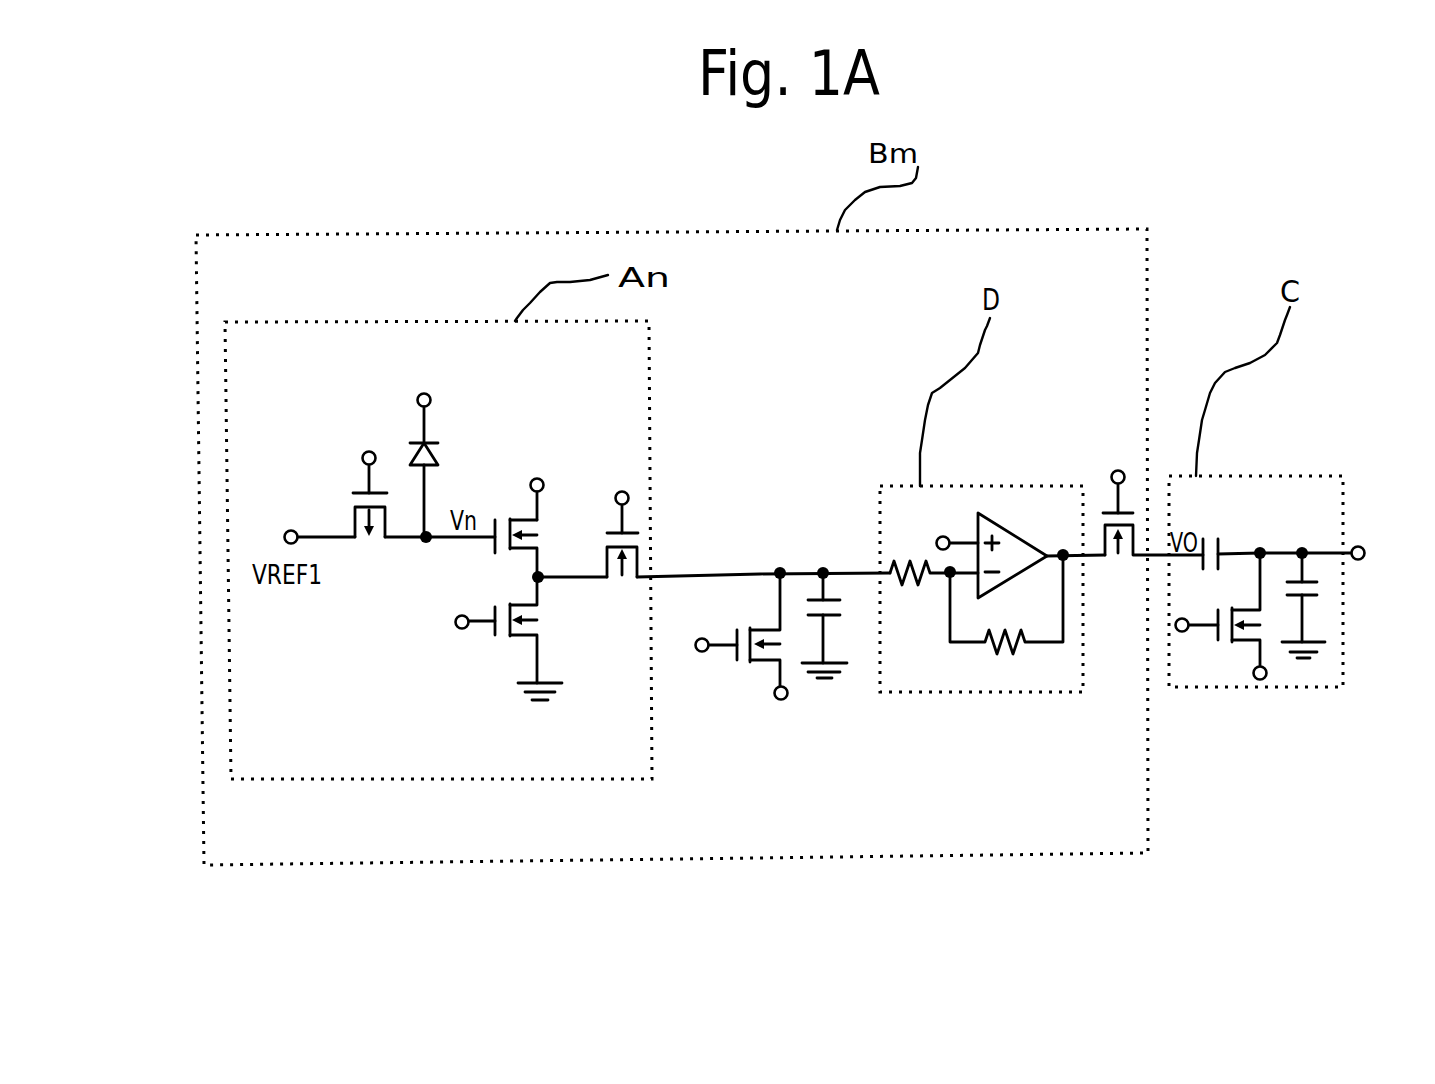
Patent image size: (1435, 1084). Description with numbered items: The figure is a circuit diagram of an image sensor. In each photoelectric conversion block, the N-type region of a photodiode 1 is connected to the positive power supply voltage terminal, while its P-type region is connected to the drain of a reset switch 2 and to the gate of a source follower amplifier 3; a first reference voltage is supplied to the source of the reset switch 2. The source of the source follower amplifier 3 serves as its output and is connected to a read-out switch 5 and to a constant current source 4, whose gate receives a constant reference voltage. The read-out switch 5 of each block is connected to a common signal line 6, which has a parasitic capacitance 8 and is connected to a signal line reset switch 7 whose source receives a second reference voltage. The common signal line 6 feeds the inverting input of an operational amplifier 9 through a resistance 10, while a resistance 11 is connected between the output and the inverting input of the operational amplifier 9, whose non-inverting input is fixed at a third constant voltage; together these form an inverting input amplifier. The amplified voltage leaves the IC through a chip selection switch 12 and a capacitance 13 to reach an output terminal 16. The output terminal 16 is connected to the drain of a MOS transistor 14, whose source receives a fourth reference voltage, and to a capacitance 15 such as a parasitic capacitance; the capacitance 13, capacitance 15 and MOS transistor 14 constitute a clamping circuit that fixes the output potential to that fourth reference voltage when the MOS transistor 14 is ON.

The photodiode 1 is at (471, 434).
The reset switch 2 is at (341, 464).
The source follower amplifier 3 is at (446, 570).
The constant current source 4 is at (464, 671).
The read-out switch 5 is at (594, 585).
The common signal line 6 is at (763, 514).
The signal line reset switch 7 is at (745, 700).
The parasitic capacitance 8 is at (843, 677).
The operational amplifier 9 is at (1005, 501).
The resistance 10 is at (934, 660).
The resistance 11 is at (1017, 671).
The chip selection switch 12 is at (1140, 468).
The capacitance 13 is at (1257, 493).
The MOS transistor 14 is at (1230, 666).
The capacitance 15 is at (1344, 640).
The output terminal 16 is at (1393, 495).